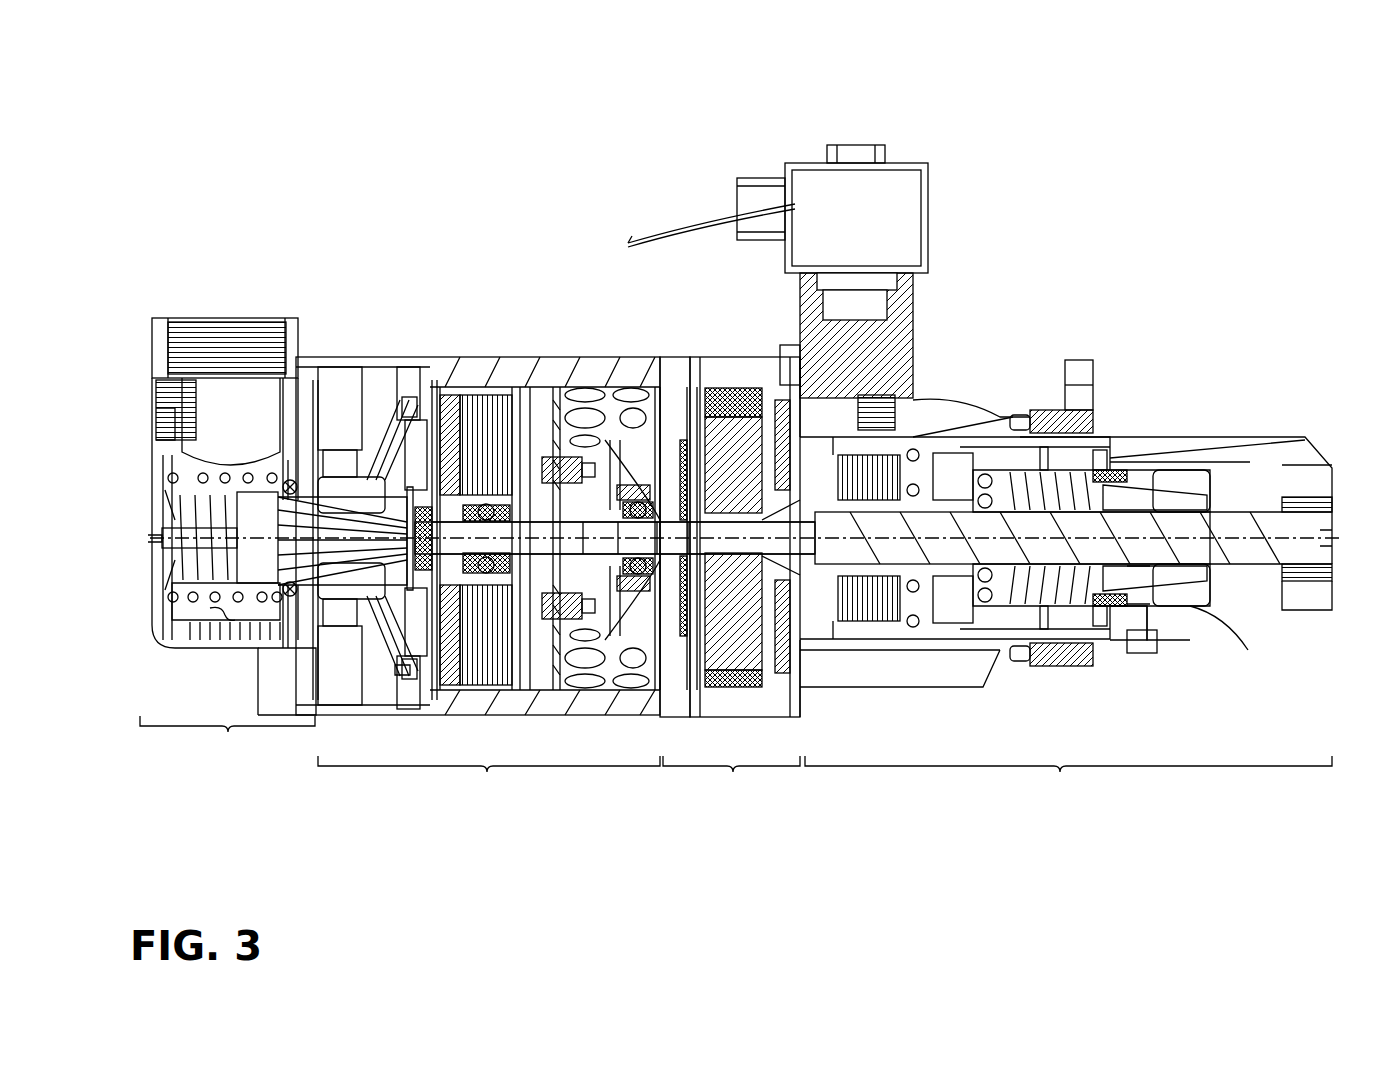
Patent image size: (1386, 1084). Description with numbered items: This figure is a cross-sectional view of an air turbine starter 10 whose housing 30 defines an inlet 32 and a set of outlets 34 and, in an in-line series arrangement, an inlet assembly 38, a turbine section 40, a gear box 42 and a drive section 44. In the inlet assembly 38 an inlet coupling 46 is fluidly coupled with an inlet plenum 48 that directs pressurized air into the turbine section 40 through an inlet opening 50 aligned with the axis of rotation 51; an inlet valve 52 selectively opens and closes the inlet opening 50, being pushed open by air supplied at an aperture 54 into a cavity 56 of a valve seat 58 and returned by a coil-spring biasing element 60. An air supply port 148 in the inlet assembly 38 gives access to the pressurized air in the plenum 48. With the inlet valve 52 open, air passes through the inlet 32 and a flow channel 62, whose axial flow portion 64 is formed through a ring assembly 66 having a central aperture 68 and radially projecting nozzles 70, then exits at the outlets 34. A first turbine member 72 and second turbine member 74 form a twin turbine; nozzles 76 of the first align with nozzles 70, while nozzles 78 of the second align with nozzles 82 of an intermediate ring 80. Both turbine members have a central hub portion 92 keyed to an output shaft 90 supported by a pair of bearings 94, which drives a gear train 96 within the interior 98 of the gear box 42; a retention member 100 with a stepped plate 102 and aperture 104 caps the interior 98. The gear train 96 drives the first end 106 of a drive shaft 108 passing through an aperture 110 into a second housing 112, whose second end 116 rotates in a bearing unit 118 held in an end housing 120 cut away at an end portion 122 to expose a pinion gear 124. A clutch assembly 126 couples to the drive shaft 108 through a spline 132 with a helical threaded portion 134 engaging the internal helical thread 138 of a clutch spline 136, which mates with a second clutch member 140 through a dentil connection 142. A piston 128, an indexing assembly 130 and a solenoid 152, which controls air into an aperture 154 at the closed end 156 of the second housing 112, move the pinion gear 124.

The air turbine starter 10 is at (425, 140).
The housing 30 is at (384, 350).
The inlet 32 is at (226, 292).
The set of outlets 34 is at (640, 357).
The inlet assembly 38 is at (227, 738).
The turbine section 40 is at (489, 777).
The gear box 42 is at (731, 775).
The drive section 44 is at (1068, 777).
The inlet coupling 46 is at (262, 326).
The inlet plenum 48 is at (205, 625).
The inlet opening 50 is at (338, 357).
The axis of rotation 51 is at (660, 560).
The inlet valve 52 is at (300, 533).
The aperture 54 is at (400, 358).
The cavity 56 is at (300, 548).
The valve seat 58 is at (305, 583).
The biasing element 60 is at (196, 445).
The flow channel 62 is at (335, 675).
The axial flow portion 64 is at (400, 675).
The ring assembly 66 is at (340, 640).
The central aperture 68 is at (372, 357).
The nozzles 70 is at (405, 690).
The first turbine member 72 is at (430, 387).
The second turbine member 74 is at (545, 357).
The nozzles 76 is at (440, 690).
The nozzles 78 is at (525, 690).
The intermediate ring 80 is at (510, 357).
The nozzles 82 is at (490, 357).
The output shaft 90 is at (692, 357).
The central hub portion 92 is at (415, 357).
The bearings 94 is at (565, 690).
The gear train 96 is at (750, 717).
The interior 98 is at (705, 690).
The retention member 100 is at (660, 620).
The plate 102 is at (676, 357).
The aperture 104 is at (650, 357).
The first end 106 is at (790, 580).
The drive shaft 108 is at (1265, 572).
The aperture 110 is at (790, 357).
The second housing 112 is at (967, 417).
The second end 116 is at (1325, 518).
The bearing unit 118 is at (1312, 582).
The end housing 120 is at (1250, 425).
The end portion 122 is at (1272, 437).
The pinion gear 124 is at (1250, 603).
The clutch assembly 126 is at (1095, 605).
The piston 128 is at (950, 440).
The indexing assembly 130 is at (1033, 457).
The spline 132 is at (1050, 600).
The helical threaded portion 134 is at (1010, 600).
The clutch spline 136 is at (1065, 610).
The internal helical thread 138 is at (1075, 460).
The second clutch member 140 is at (1128, 470).
The dentil connection 142 is at (1130, 590).
The air supply port 148 is at (160, 412).
The solenoid 152 is at (928, 217).
The aperture 154 is at (915, 400).
The closed end 156 is at (905, 280).